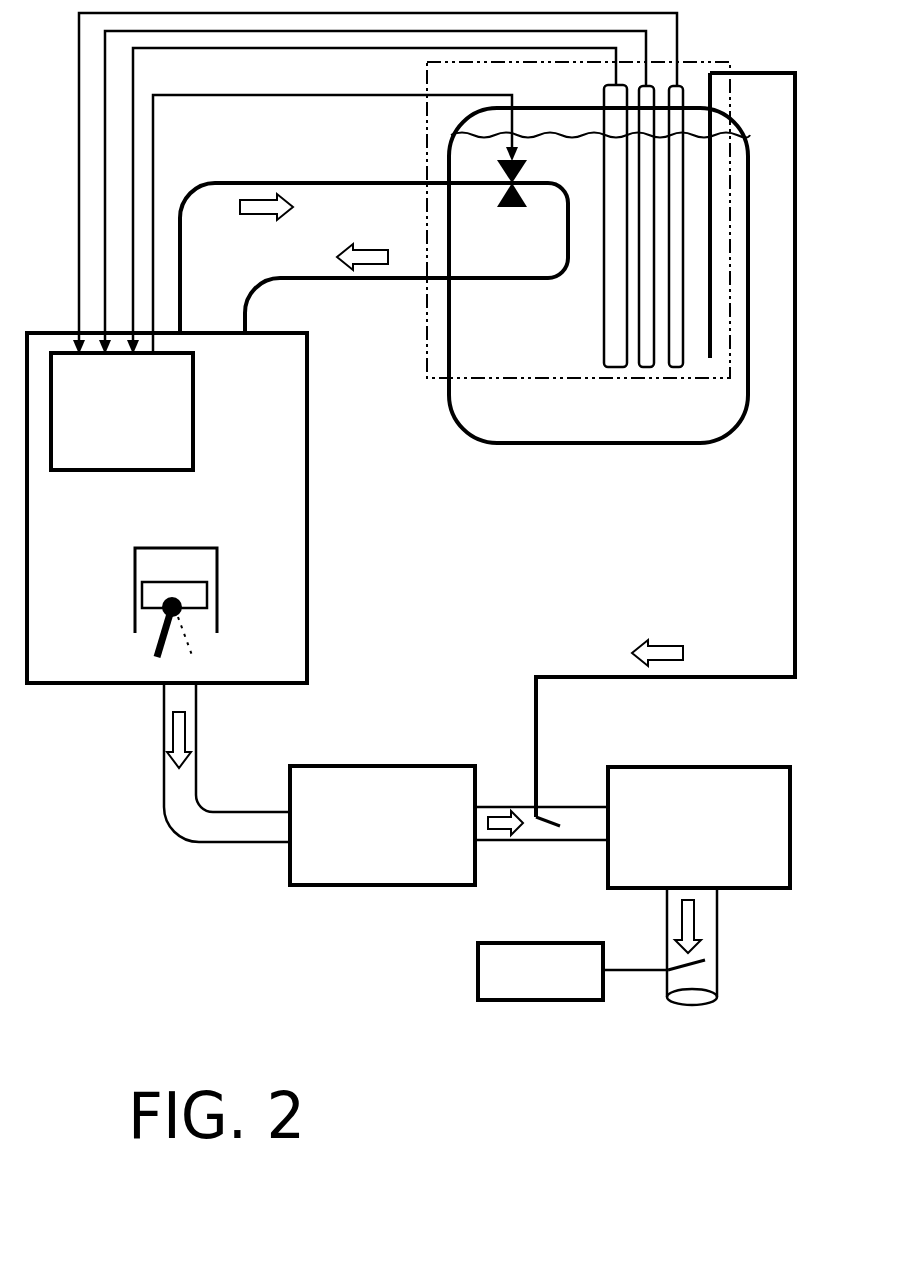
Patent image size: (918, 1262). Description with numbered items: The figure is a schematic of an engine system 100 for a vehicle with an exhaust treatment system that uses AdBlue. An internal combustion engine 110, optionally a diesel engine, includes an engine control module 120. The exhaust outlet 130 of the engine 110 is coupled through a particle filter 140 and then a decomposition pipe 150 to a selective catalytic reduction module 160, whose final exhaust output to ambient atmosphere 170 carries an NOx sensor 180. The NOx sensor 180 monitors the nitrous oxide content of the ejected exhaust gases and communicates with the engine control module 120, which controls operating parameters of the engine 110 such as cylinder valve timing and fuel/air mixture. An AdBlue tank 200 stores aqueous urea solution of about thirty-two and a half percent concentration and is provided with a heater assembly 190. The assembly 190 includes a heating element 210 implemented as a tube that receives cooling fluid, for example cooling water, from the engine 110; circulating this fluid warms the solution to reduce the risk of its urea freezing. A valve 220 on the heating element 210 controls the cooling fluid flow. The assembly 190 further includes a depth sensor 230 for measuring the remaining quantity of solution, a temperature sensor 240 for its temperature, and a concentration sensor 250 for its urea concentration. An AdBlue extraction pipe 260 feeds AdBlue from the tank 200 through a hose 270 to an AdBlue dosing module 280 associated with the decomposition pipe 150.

The engine system 100 is at (248, 948).
The internal combustion engine 110 is at (222, 418).
The engine control module 120 is at (101, 418).
The exhaust outlet 130 is at (162, 803).
The particle filter 140 is at (356, 831).
The decomposition pipe 150 is at (585, 840).
The selective catalytic reduction module 160 is at (671, 834).
The final exhaust output to ambient atmosphere 170 is at (717, 933).
The NOx sensor 180 is at (512, 981).
The heater assembly 190 is at (425, 353).
The AdBlue tank 200 is at (556, 418).
The heating element 210 is at (483, 281).
The valve 220 is at (500, 164).
The depth sensor 230 is at (613, 343).
The temperature sensor 240 is at (642, 368).
The concentration sensor 250 is at (675, 368).
The AdBlue extraction pipe 260 is at (710, 335).
The hose 270 is at (535, 718).
The AdBlue dosing module 280 is at (548, 820).